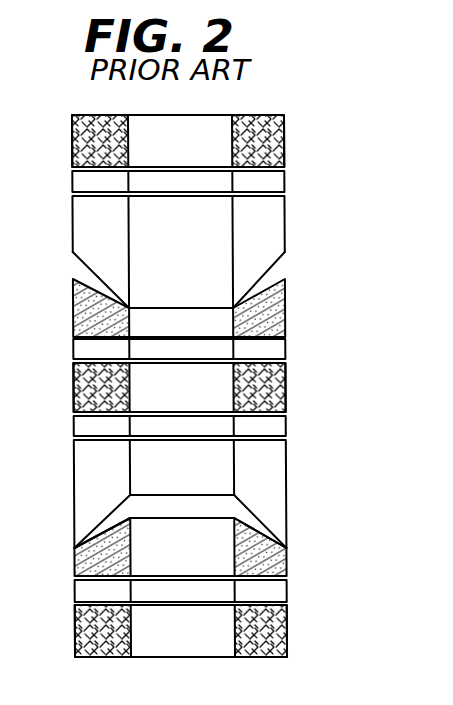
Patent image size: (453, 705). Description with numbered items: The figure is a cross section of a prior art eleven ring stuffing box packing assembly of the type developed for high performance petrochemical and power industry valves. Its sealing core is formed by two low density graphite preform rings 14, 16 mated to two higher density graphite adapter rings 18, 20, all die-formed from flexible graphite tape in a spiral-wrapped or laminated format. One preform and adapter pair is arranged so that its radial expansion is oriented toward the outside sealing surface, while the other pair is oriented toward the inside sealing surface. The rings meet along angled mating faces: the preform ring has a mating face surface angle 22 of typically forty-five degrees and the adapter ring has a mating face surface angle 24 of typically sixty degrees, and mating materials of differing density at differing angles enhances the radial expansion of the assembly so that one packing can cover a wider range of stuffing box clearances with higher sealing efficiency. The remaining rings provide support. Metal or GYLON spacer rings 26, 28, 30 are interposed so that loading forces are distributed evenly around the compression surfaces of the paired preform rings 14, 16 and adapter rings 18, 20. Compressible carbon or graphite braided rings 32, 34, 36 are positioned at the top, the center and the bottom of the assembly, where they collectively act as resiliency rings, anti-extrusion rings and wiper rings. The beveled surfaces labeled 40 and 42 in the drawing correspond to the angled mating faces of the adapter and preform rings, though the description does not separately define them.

The preform ring 14 is at (201, 252).
The preform ring 16 is at (202, 494).
The adapter ring 18 is at (287, 297).
The adapter ring 20 is at (285, 562).
The mating face surface angle 22 is at (270, 263).
The mating face surface angle 24 is at (278, 178).
The spacer ring 26 is at (285, 348).
The spacer ring 28 is at (283, 590).
The spacer ring 30 is at (283, 425).
The braided ring 32 is at (278, 135).
The braided ring 34 is at (280, 388).
The braided ring 36 is at (285, 634).
The beveled surface of lower adapter ring 40 is at (107, 515).
The beveled surface of upper adapter ring 42 is at (89, 262).